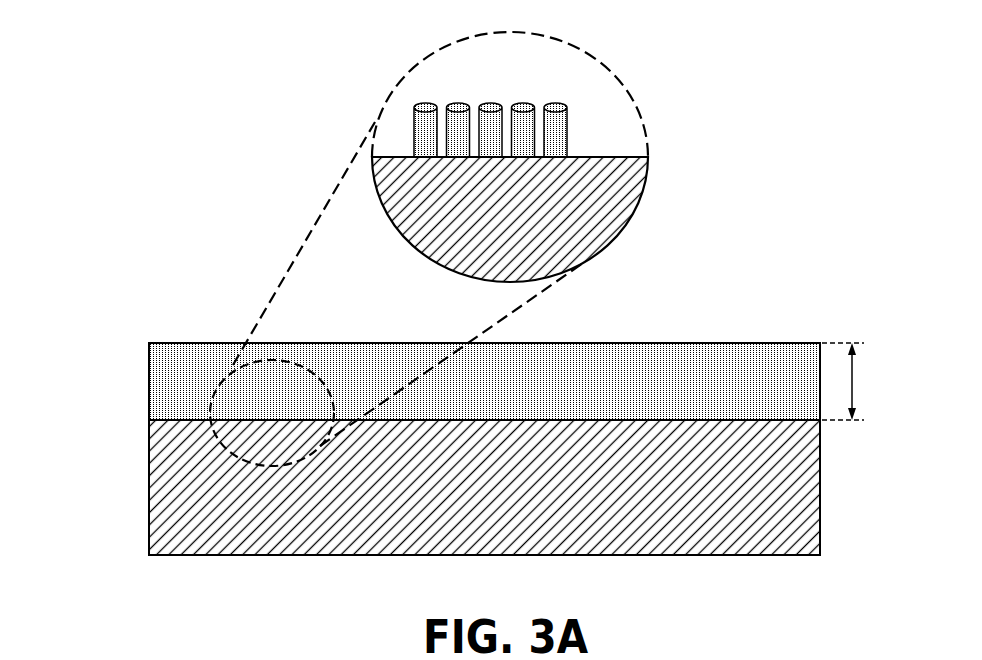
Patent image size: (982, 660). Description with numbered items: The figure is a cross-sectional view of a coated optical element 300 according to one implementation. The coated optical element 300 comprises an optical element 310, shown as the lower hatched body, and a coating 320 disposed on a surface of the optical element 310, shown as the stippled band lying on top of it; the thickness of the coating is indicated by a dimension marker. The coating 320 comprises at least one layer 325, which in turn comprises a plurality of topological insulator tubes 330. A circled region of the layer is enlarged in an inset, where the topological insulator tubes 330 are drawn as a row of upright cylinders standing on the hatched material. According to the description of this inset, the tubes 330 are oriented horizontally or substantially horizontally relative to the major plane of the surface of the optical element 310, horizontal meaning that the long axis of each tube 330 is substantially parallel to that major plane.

The coated optical element 300 is at (205, 142).
The optical element 310 is at (149, 475).
The coating 320 is at (149, 375).
The layer 325 is at (748, 340).
The topological insulator tubes 330 is at (565, 120).